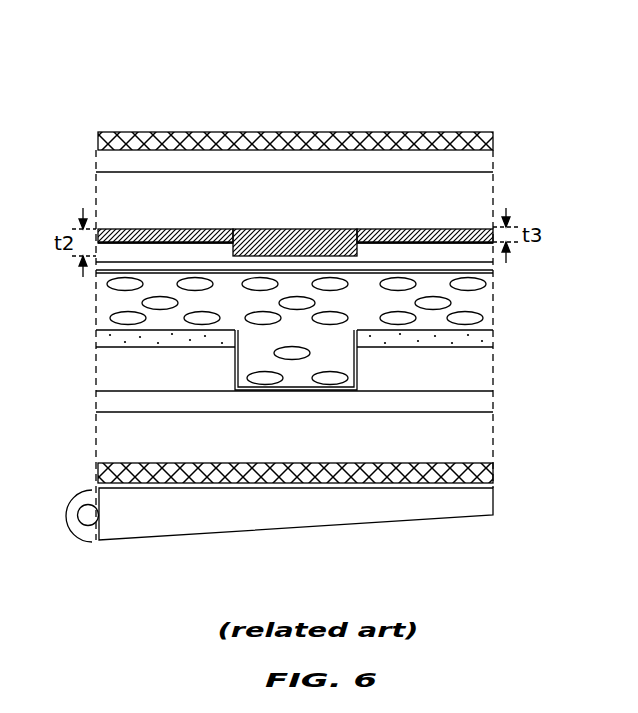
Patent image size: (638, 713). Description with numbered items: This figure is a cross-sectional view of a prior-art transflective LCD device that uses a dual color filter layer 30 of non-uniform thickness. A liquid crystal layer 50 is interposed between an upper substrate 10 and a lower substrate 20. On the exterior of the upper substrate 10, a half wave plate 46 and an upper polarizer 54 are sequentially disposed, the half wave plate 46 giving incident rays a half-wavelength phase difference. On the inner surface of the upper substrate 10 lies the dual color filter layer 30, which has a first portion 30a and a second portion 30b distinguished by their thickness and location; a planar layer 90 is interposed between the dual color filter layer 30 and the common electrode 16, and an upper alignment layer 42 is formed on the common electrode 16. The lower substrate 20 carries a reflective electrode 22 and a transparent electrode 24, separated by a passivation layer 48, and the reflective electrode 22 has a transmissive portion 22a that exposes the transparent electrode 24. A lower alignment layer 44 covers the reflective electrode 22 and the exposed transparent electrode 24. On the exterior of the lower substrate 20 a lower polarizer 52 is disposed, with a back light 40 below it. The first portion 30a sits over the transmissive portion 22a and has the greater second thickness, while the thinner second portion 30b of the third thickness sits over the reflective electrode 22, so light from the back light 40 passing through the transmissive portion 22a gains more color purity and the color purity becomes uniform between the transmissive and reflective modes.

The upper substrate 10 is at (485, 205).
The common electrode 16 is at (480, 264).
The lower substrate 20 is at (485, 437).
The reflective electrode 22 is at (482, 338).
The transmissive portion 22a is at (250, 338).
The transparent electrode 24 is at (485, 400).
The dual color filter layer 30 is at (295, 133).
The first portion 30a is at (283, 229).
The second portion 30b is at (428, 229).
The back light 40 is at (485, 502).
The upper alignment layer 42 is at (127, 273).
The lower alignment layer 44 is at (100, 327).
The half wave plate 46 is at (485, 162).
The passivation layer 48 is at (485, 368).
The liquid crystal layer 50 is at (485, 307).
The lower polarizer 52 is at (485, 473).
The upper polarizer 54 is at (471, 132).
The planar layer 90 is at (111, 252).